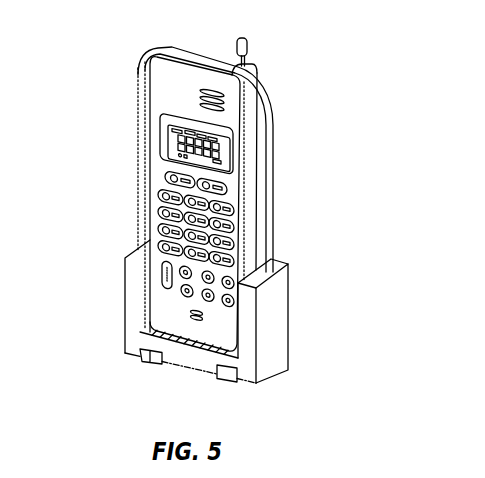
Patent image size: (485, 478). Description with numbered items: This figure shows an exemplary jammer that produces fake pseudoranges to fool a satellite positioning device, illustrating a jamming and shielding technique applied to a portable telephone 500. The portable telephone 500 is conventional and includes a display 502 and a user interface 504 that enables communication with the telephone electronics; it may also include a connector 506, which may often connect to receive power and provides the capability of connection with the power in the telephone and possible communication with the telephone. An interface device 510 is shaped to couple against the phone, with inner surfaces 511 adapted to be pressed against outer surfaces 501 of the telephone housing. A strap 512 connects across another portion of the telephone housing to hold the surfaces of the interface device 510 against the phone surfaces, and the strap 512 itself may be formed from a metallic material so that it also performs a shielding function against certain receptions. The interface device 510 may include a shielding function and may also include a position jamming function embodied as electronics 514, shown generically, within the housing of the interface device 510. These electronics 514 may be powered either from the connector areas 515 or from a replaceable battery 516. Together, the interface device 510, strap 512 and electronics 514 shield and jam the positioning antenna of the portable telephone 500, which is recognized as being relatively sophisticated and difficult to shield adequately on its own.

The portable telephone 500 is at (254, 178).
The outer surfaces of the telephone housing 501 is at (252, 131).
The display 502 is at (163, 150).
The user interface 504 is at (157, 283).
The connector 506 is at (157, 329).
The interface device 510 is at (247, 338).
The inner surfaces 511 is at (150, 311).
The strap 512 is at (172, 52).
The electronics 514 is at (228, 380).
The connector areas 515 is at (172, 340).
The replaceable battery 516 is at (143, 357).